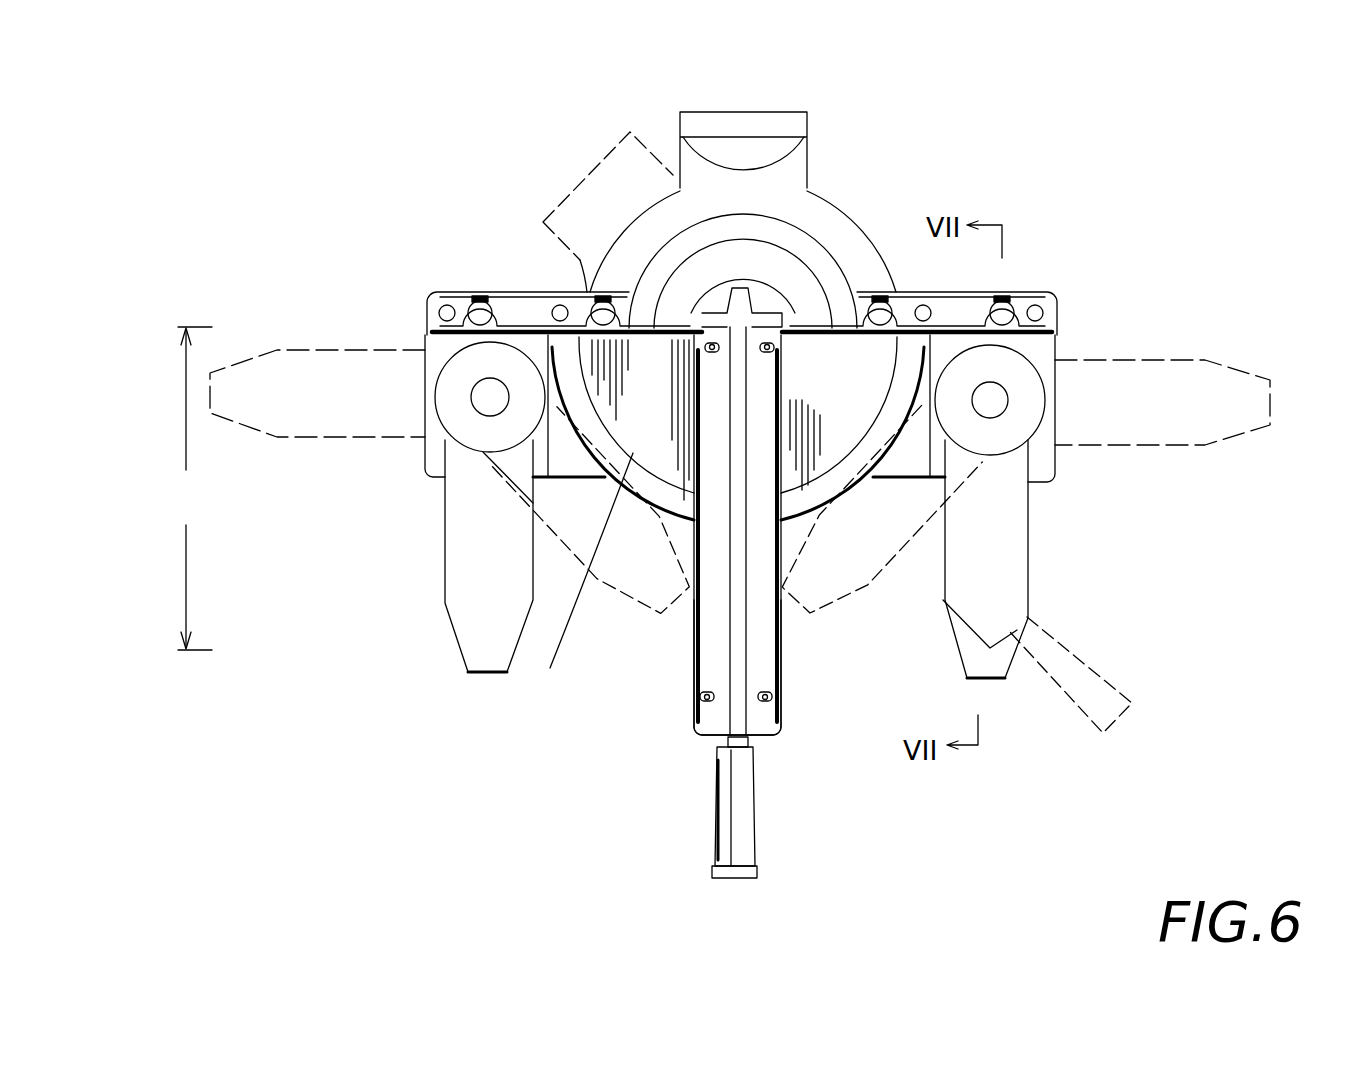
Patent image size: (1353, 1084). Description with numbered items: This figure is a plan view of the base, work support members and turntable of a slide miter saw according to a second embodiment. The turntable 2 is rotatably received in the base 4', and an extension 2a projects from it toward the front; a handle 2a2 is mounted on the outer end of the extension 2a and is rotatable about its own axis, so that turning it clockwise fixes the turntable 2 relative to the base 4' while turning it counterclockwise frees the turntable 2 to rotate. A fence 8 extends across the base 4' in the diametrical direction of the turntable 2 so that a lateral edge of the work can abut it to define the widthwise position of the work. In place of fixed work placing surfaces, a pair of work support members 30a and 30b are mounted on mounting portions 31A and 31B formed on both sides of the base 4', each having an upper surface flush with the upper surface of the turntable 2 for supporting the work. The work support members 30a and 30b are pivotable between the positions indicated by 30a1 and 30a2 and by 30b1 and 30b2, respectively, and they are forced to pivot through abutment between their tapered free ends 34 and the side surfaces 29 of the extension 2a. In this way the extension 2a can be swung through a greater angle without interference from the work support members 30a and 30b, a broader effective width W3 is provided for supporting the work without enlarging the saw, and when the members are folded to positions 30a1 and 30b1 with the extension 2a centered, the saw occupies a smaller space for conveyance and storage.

The turntable 2 is at (661, 511).
The extension 2a is at (781, 713).
The handle 2a2 is at (745, 847).
The base 4' is at (785, 274).
The fence 8 is at (510, 330).
The side surfaces 29 is at (788, 688).
The work support member 30a is at (482, 673).
The work support member 30b is at (998, 680).
The pivoted position of work support member 30a1 is at (615, 585).
The pivoted position of work support member 30b1 is at (827, 607).
The pivoted position of work support member 30a2 is at (318, 440).
The pivoted position of work support member 30b2 is at (1148, 447).
The mounting portion 31A is at (437, 350).
The mounting portion 31B is at (1050, 352).
The tapered free ends 34 is at (462, 626).
The effective width W3 is at (196, 488).